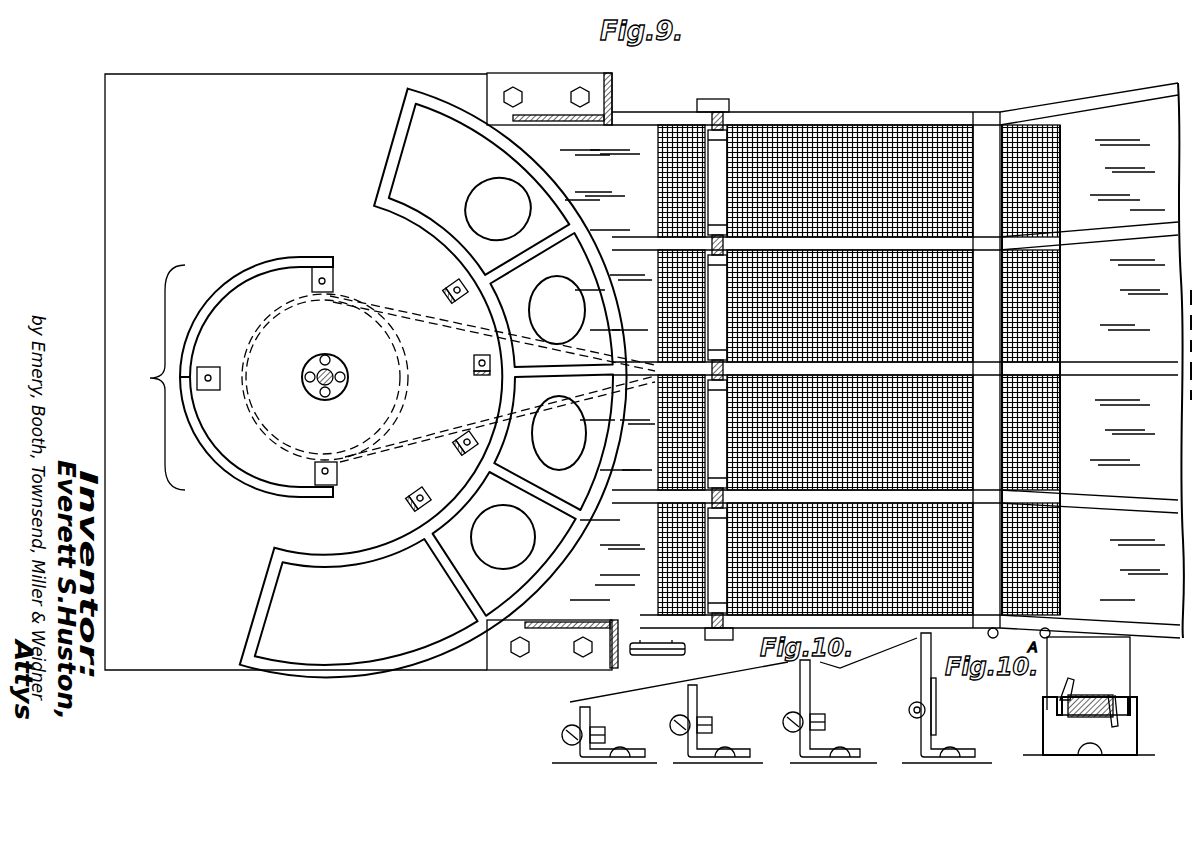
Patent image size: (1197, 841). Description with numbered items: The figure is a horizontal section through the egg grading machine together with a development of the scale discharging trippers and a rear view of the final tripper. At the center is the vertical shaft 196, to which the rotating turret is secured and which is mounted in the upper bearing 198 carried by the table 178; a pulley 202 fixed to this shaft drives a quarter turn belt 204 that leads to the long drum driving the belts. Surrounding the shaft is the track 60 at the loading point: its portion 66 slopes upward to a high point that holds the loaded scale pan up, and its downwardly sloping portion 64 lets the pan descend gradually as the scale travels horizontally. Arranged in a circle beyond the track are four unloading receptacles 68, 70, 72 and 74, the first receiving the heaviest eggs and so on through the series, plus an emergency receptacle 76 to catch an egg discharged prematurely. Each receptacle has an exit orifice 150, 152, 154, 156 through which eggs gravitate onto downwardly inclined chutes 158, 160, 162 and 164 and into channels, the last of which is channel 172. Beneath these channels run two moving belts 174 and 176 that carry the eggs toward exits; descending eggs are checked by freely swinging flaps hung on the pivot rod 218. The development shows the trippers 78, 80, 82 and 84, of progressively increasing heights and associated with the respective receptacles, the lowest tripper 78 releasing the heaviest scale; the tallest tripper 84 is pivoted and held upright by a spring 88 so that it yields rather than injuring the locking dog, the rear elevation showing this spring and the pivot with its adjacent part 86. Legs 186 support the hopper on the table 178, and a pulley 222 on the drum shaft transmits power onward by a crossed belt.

In FIG. 9, the track 60 is at (151, 377).
In FIG. 9, the downwardly sloping portion 64 is at (253, 482).
In FIG. 9, the upwardly sloping portion 66 is at (243, 278).
In FIG. 10, the upwardly sloping portion 66 is at (743, 666).
In FIG. 9, the receptacle 68 is at (480, 503).
In FIG. 9, the receptacle 70 is at (523, 392).
In FIG. 9, the receptacle 72 is at (513, 308).
In FIG. 9, the receptacle 74 is at (447, 218).
In FIG. 9, the emergency receptacle 76 is at (343, 567).
In FIG. 9, the tripper 78 is at (411, 496).
In FIG. 10, the tripper 78 is at (580, 715).
In FIG. 9, the tripper 80 is at (459, 442).
In FIG. 10, the tripper 80 is at (690, 702).
In FIG. 9, the tripper 82 is at (474, 362).
In FIG. 10, the tripper 82 is at (800, 690).
In FIG. 9, the tripper 84 is at (448, 292).
In FIG. 10, the tripper 84 is at (923, 673).
In FIG. 10A, the tripper 84 is at (1127, 677).
In FIG. 10, the bolt 86 is at (910, 710).
In FIG. 10, the spring 88 is at (936, 697).
In FIG. 10A, the spring 88 is at (1087, 713).
In FIG. 9, the exit orifice 150 is at (502, 560).
In FIG. 9, the exit orifice 152 is at (570, 453).
In FIG. 9, the exit orifice 154 is at (556, 296).
In FIG. 9, the exit orifice 156 is at (483, 179).
In FIG. 9, the chute 158 is at (600, 533).
In FIG. 9, the chute 160 is at (632, 412).
In FIG. 9, the chute 162 is at (633, 313).
In FIG. 9, the chute 164 is at (590, 195).
In FIG. 9, the channel 172 is at (818, 125).
In FIG. 9, the belt 174 is at (1052, 412).
In FIG. 9, the belt 176 is at (1052, 302).
In FIG. 9, the table 178 is at (323, 82).
In FIG. 9, the legs 186 is at (612, 98).
In FIG. 9, the vertical shaft 196 is at (320, 388).
In FIG. 9, the upper bearing 198 is at (318, 364).
In FIG. 9, the pulley 202 is at (402, 384).
In FIG. 9, the quarter turn belt 204 is at (382, 293).
In FIG. 9, the pivot rod 218 is at (728, 115).
In FIG. 9, the pulley 222 is at (687, 655).